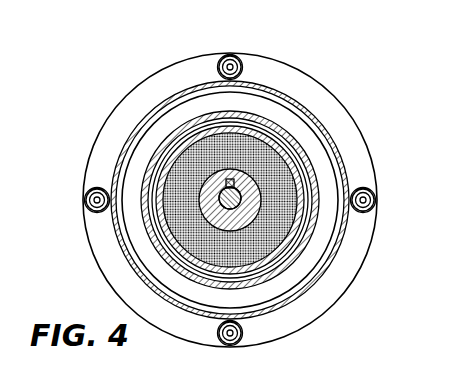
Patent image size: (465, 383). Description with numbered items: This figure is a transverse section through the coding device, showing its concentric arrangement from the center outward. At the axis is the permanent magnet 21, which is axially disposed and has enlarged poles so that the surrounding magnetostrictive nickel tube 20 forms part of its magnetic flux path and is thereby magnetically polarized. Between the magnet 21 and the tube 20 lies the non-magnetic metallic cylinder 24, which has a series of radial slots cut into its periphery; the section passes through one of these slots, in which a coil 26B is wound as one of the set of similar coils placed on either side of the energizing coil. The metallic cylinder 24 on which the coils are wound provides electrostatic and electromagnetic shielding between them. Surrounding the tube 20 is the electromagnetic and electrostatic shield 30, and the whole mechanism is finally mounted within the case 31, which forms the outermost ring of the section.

The magnetostrictive tube 20 is at (299, 190).
The permanent magnet 21 is at (246, 181).
The non-magnetic metallic cylinder 24 is at (297, 182).
The coil 26B is at (312, 180).
The electromagnetic and electrostatic shield 30 is at (315, 220).
The case 31 is at (339, 245).